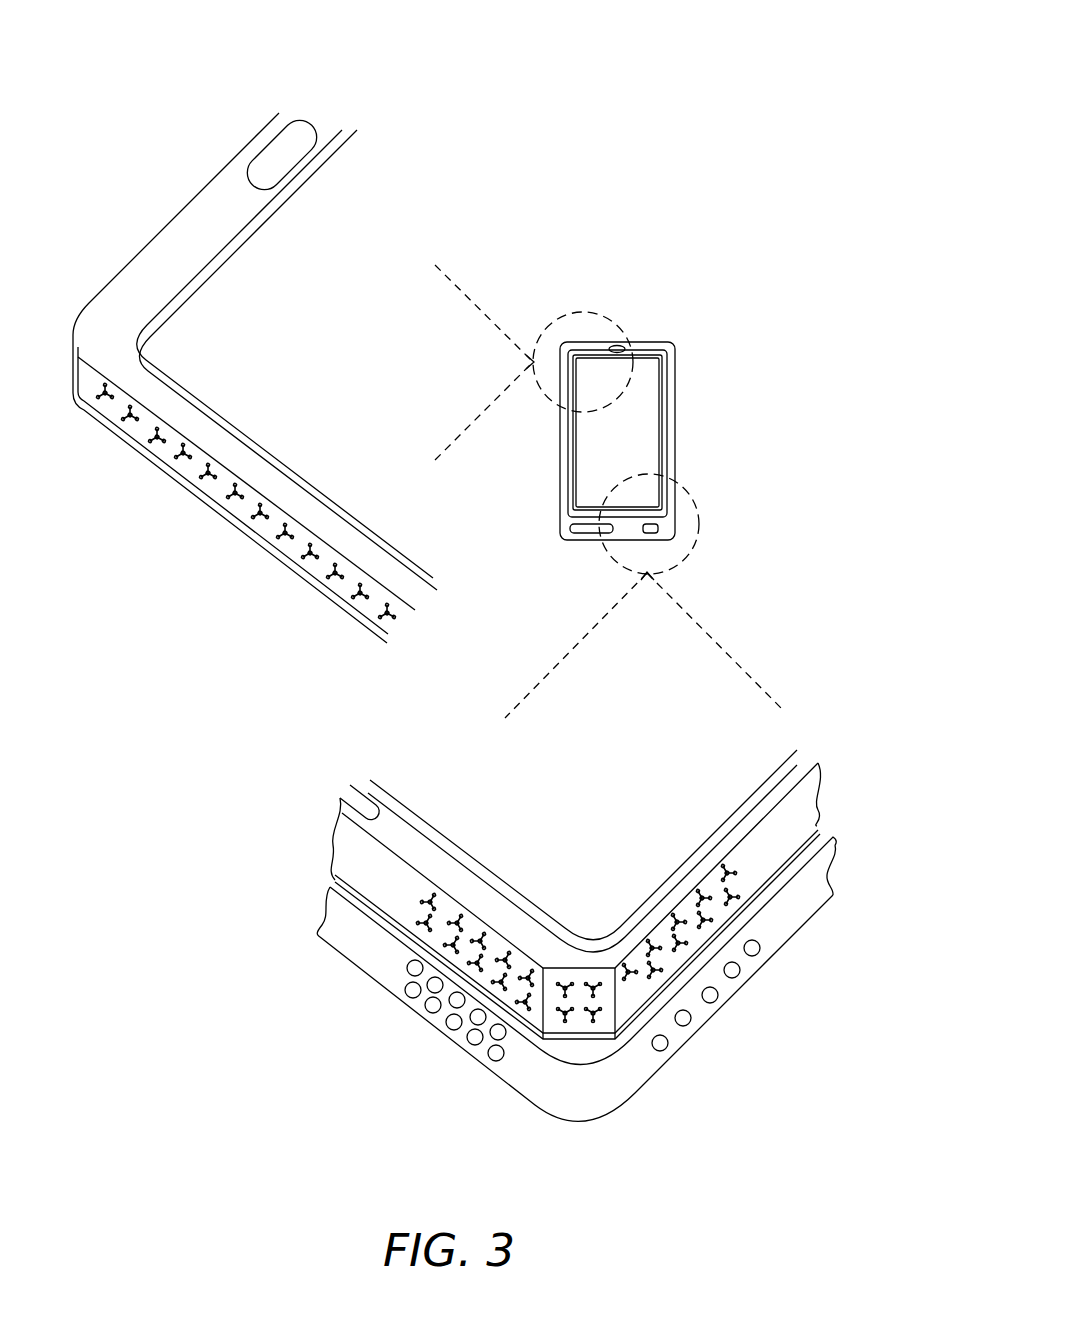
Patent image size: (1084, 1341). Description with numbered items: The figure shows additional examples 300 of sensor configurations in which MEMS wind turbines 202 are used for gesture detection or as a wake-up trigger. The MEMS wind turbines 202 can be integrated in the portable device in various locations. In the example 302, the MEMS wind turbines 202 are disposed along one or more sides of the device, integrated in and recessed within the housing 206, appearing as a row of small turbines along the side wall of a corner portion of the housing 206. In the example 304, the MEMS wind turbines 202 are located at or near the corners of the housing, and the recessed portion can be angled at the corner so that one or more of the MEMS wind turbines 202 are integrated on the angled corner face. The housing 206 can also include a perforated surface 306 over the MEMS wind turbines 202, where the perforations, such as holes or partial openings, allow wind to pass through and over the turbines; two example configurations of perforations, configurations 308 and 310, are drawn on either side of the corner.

The additional examples of sensor configurations 300 is at (697, 55).
The example 302 is at (146, 205).
The example 304 is at (274, 810).
The MEMS wind turbines 202 is at (257, 513).
The housing 206 is at (150, 458).
The perforated surface 306 is at (515, 1093).
The configuration of perforations 308 is at (440, 1022).
The configuration of perforations 310 is at (697, 1008).